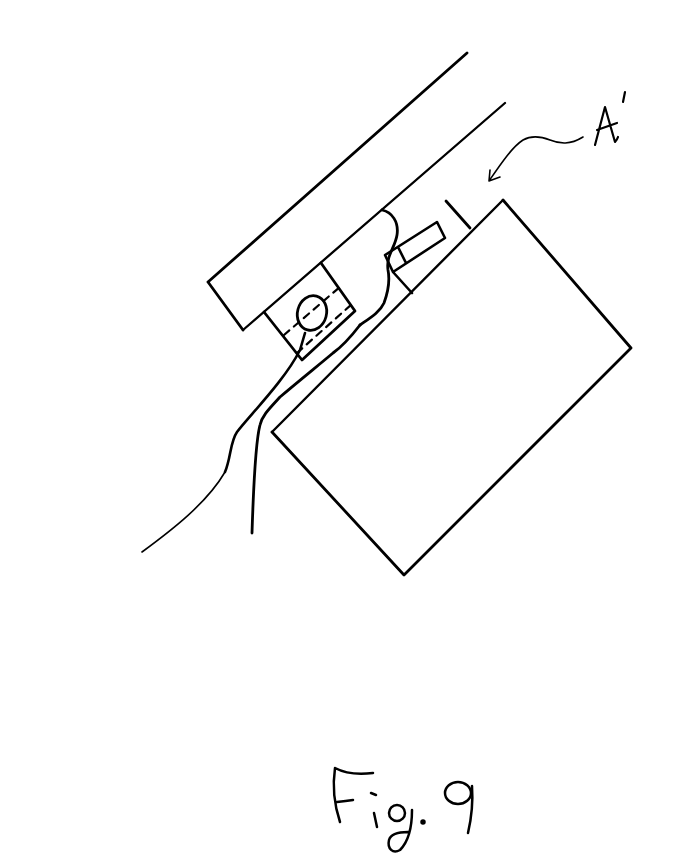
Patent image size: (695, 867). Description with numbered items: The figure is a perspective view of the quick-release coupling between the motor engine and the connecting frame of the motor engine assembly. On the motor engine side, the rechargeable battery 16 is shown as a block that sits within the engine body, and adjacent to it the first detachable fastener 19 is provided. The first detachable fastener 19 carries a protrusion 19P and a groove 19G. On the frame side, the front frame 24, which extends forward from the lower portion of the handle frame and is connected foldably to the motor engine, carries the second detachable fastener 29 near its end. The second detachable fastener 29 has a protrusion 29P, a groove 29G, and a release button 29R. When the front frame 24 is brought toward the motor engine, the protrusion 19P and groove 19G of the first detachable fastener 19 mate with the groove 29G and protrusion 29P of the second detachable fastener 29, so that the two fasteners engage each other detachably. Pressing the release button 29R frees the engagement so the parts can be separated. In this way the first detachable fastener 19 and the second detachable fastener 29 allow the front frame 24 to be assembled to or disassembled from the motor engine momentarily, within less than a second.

The rechargeable battery 16 is at (470, 485).
The first detachable fastener 19 is at (446, 199).
The protrusion 19P is at (382, 210).
The groove 19G is at (287, 567).
The front frame 24 is at (418, 133).
The second detachable fastener 29 is at (267, 357).
The release button 29R is at (300, 313).
The groove 29G is at (288, 330).
The protrusion 29P is at (127, 578).